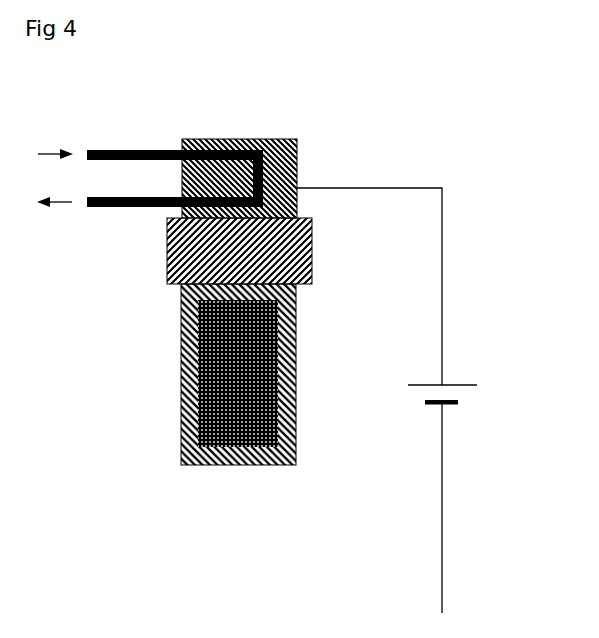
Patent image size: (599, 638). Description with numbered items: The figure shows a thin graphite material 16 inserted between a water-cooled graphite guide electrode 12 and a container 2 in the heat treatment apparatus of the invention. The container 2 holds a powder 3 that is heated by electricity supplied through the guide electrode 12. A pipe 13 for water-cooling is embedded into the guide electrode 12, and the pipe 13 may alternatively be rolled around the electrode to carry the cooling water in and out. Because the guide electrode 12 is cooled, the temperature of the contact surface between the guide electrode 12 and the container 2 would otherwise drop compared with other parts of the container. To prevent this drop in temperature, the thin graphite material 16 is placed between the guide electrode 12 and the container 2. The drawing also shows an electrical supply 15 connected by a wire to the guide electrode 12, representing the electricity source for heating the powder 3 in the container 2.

The container 2 is at (180, 340).
The powder 3 is at (198, 391).
The water-cooled guide electrode 12 is at (297, 156).
The pipe 13 is at (116, 148).
The power supply 15 is at (468, 402).
The thin graphite material 16 is at (313, 263).